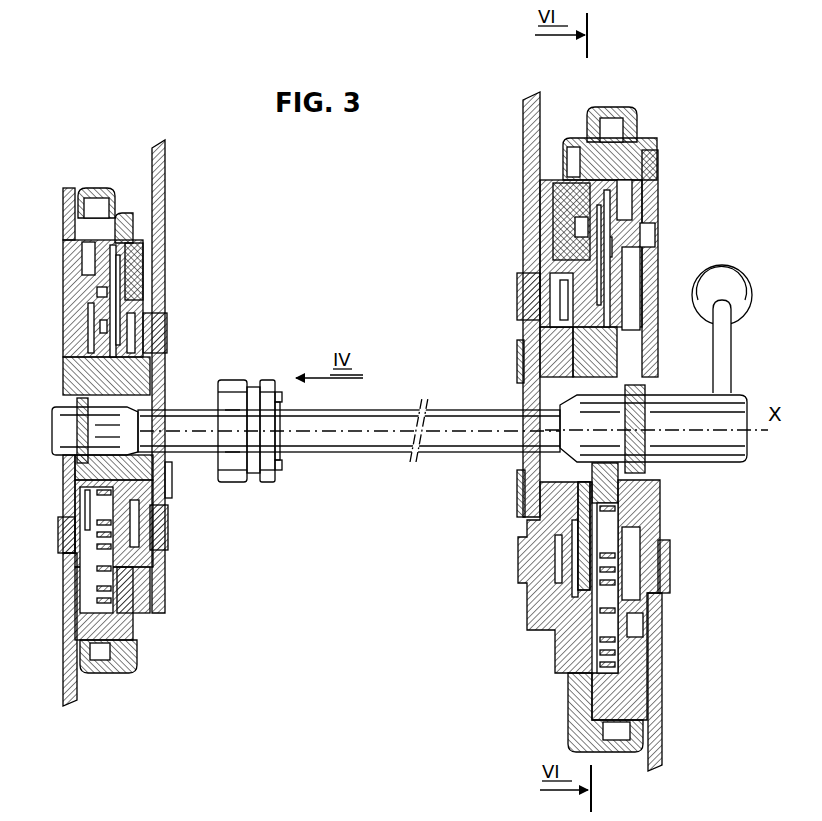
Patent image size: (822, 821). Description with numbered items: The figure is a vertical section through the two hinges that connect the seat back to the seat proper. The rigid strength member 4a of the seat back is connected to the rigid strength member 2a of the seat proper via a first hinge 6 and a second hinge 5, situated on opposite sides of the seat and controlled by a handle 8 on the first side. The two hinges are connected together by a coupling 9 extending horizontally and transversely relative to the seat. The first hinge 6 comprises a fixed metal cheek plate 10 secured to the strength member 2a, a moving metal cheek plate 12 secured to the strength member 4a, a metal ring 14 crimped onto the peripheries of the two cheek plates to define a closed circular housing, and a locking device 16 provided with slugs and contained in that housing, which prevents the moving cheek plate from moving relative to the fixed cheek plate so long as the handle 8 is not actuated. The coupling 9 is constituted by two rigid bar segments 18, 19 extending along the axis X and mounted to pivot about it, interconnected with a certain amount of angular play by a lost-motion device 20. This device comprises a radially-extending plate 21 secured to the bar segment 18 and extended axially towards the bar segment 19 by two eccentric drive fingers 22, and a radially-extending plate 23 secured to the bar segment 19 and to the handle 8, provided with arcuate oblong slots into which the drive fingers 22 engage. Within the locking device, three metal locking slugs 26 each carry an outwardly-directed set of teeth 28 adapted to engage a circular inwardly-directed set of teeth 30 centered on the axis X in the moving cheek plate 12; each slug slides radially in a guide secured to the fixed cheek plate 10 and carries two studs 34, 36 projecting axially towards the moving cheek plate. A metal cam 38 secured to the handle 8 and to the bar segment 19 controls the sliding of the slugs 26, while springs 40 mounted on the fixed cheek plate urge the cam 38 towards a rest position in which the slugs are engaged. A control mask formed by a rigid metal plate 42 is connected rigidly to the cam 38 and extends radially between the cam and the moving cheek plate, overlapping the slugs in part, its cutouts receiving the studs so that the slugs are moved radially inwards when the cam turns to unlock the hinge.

The rigid strength member of the seat proper 2a is at (70, 660).
The rigid strength member of the seat back 4a is at (158, 160).
The second hinge 5 is at (91, 179).
The first hinge 6 is at (650, 115).
The handle 8 is at (724, 345).
The coupling 9 is at (379, 368).
The fixed metal cheek plate 10 is at (66, 253).
The moving metal cheek plate 12 is at (130, 252).
The metal ring 14 is at (95, 188).
The locking device 16 is at (596, 602).
The bar segment 18 is at (178, 453).
The bar segment 19 is at (373, 426).
The lost-motion device 20 is at (283, 413).
The radially-extending plate 21 is at (240, 471).
The eccentric drive fingers 22 is at (276, 406).
The radially-extending plate 23 is at (278, 468).
The metal locking slugs 26 is at (96, 313).
The outwardly-directed set of teeth 28 is at (133, 226).
The inwardly-directed set of teeth 30 is at (128, 640).
The stud 34 is at (106, 291).
The stud 36 is at (127, 327).
The metal cam 38 is at (100, 380).
The springs 40 is at (100, 533).
The rigid metal plate 42 is at (128, 303).